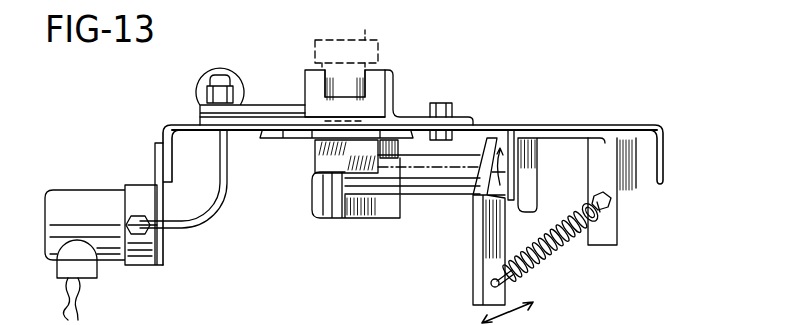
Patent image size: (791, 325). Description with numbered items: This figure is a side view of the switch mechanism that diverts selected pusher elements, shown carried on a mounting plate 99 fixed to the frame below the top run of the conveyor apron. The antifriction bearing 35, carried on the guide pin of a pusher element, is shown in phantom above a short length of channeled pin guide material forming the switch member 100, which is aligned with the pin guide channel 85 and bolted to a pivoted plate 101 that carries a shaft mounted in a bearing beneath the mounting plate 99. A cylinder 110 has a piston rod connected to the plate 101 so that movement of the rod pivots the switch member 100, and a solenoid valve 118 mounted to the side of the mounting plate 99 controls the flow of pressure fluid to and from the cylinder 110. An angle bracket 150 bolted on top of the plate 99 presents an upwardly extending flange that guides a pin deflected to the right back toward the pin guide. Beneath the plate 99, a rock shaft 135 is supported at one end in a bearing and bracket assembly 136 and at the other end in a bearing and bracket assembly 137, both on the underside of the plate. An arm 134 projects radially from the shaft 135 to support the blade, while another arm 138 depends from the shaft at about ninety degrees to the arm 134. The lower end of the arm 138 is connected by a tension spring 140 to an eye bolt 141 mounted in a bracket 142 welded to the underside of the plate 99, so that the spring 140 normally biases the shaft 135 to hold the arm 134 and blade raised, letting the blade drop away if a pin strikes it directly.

The antifriction bearing 35 is at (322, 40).
The switch member 100 is at (308, 82).
The pin guide channel 85 is at (362, 70).
The angle bracket 150 is at (395, 85).
The cylinder 110 is at (197, 78).
The plate 101 is at (287, 88).
The solenoid valve 118 is at (88, 190).
The mounting plate 99 is at (580, 125).
The bearing and bracket assembly 137 is at (313, 190).
The arm 134 is at (368, 212).
The rock shaft 135 is at (430, 187).
The bearing and bracket assembly 136 is at (510, 153).
The arm 138 is at (473, 283).
The tension spring 140 is at (552, 258).
The eye bolt 141 is at (603, 223).
The bracket 142 is at (622, 230).